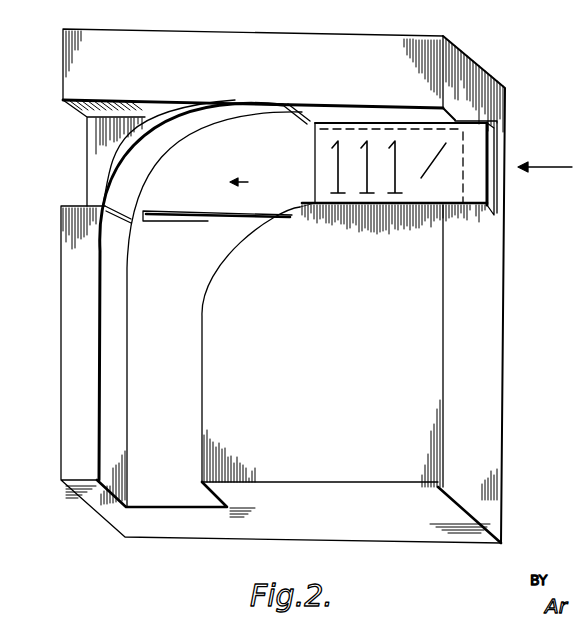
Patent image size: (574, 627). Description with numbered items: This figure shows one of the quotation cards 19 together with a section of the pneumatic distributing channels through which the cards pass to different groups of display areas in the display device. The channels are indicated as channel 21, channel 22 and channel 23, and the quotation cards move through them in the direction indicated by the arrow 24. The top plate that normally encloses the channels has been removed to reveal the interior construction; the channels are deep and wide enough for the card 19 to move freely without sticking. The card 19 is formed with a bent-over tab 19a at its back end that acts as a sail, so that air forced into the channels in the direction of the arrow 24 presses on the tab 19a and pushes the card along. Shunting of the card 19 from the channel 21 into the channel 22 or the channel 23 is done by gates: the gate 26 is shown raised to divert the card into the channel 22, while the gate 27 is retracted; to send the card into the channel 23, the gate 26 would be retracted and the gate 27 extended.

The quotation card 19 is at (477, 155).
The bent-over tab 19a is at (492, 206).
The channel 21 is at (293, 183).
The channel 22 is at (185, 350).
The channel 23 is at (105, 142).
The arrow 24 is at (253, 183).
The gate 26 is at (216, 106).
The gate 27 is at (200, 222).